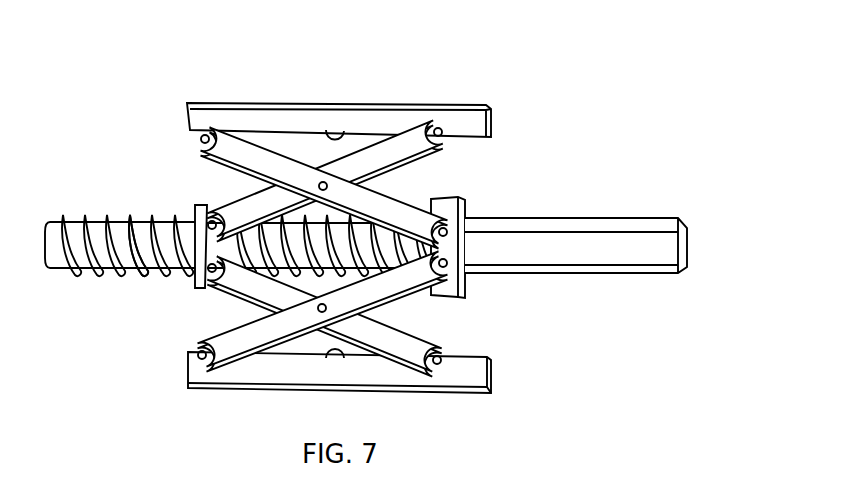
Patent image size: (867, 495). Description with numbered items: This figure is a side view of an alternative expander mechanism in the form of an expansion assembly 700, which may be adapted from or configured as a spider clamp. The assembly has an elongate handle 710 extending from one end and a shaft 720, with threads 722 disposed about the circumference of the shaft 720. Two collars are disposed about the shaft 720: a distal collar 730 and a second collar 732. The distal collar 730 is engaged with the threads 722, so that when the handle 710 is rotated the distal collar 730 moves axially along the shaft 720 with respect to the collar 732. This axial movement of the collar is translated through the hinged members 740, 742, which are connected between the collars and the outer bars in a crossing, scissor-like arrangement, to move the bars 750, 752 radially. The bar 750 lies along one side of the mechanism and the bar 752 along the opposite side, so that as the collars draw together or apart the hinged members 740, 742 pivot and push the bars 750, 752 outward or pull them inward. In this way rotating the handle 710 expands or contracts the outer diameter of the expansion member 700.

The expansion assembly 700 is at (592, 79).
The elongate handle 710 is at (650, 229).
The shaft 720 is at (118, 232).
The threads 722 is at (140, 283).
The distal collar 730 is at (203, 207).
The collar 732 is at (466, 290).
The hinged member 740 is at (412, 147).
The hinged member 742 is at (440, 337).
The bar 750 is at (483, 103).
The bar 752 is at (490, 388).